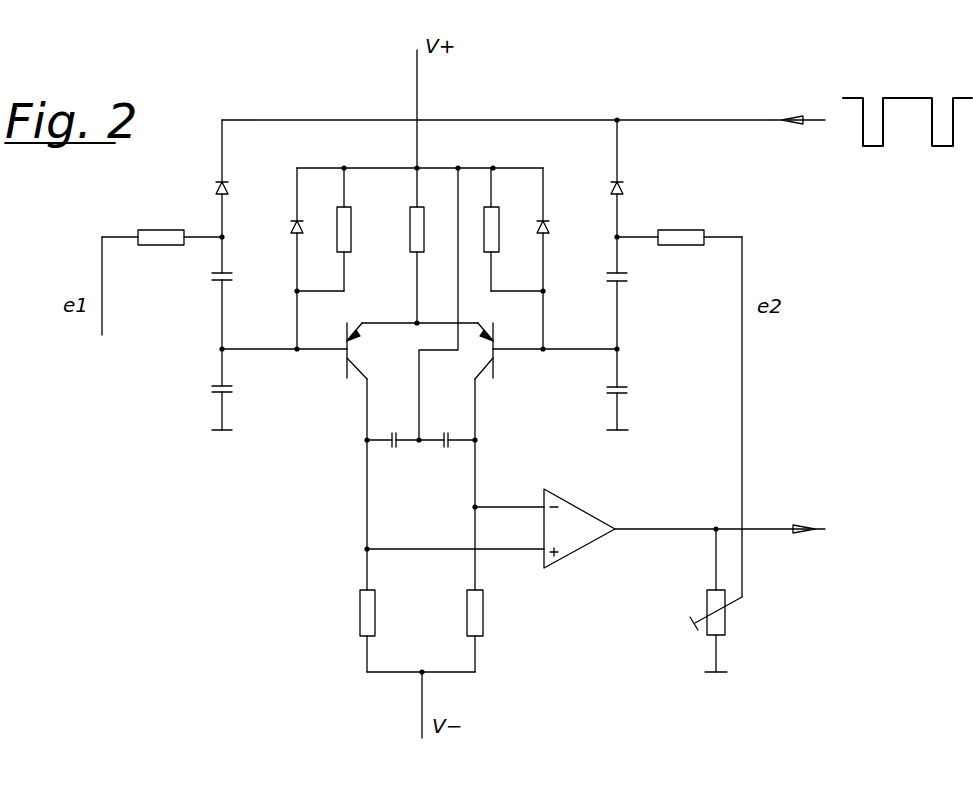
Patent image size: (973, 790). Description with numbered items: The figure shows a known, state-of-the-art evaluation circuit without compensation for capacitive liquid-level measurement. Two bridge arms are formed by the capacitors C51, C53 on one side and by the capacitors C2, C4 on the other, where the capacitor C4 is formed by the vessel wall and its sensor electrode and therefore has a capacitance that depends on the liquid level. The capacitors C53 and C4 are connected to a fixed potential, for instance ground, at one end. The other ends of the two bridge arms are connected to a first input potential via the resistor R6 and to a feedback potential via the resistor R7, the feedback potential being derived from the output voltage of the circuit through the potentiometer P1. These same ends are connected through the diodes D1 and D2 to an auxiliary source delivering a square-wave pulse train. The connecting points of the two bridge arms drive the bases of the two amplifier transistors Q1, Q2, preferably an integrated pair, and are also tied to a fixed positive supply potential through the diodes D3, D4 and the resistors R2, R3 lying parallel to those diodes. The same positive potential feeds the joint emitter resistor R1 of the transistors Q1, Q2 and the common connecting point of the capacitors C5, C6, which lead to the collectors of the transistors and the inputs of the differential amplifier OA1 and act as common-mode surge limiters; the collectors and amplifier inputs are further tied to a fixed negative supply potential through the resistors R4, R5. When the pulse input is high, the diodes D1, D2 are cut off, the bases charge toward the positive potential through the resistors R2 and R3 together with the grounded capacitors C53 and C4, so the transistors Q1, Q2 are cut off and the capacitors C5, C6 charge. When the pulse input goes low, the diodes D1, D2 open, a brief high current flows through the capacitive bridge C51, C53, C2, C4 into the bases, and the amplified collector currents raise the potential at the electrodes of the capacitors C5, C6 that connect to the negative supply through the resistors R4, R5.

The diode D1 is at (209, 187).
The diode D2 is at (633, 190).
The diode D3 is at (282, 221).
The diode D4 is at (559, 228).
The joint emitter resistor R1 is at (432, 231).
The resistor R2 is at (360, 231).
The resistor R3 is at (507, 231).
The resistor R4 is at (384, 614).
The resistor R5 is at (491, 614).
The resistor R6 is at (161, 226).
The resistor R7 is at (681, 226).
The capacitor C2 is at (633, 281).
The capacitor C4 is at (633, 393).
The capacitor C5 is at (393, 454).
The capacitor C6 is at (448, 454).
The capacitor C51 is at (244, 281).
The capacitor C53 is at (244, 391).
The amplifier transistor Q1 is at (341, 354).
The amplifier transistor Q2 is at (502, 354).
The differential amplifier OA1 is at (579, 528).
The potentiometer P1 is at (723, 614).